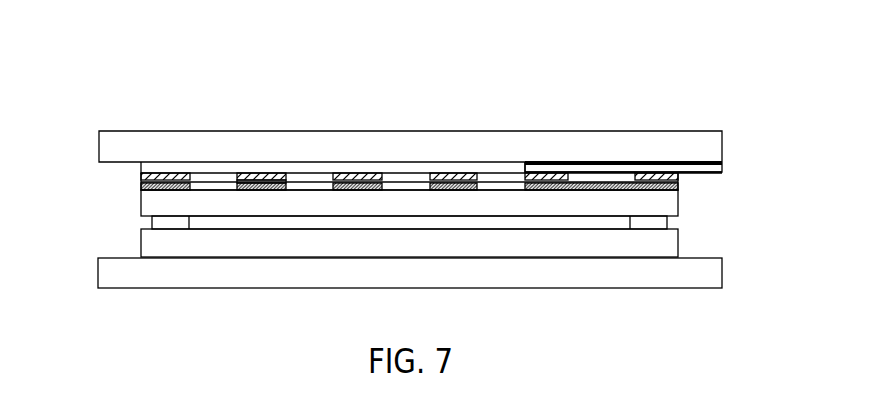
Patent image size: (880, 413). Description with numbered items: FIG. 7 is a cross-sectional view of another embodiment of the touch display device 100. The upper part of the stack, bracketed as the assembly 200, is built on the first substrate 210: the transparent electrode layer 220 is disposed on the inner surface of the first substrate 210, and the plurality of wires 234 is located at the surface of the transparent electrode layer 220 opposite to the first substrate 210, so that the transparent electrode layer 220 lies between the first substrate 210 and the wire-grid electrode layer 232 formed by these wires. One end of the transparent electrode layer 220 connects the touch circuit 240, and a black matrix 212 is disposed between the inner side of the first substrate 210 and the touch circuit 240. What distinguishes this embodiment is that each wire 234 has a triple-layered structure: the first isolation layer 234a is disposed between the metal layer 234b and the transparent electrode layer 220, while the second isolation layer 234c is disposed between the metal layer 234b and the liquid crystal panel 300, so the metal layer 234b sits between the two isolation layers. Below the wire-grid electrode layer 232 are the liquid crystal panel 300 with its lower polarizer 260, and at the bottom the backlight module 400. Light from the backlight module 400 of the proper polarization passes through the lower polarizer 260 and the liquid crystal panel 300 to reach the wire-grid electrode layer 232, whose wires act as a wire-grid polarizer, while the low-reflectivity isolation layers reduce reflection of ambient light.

The touch display device 100 is at (143, 44).
The display panel 200 is at (733, 129).
The first substrate 210 is at (103, 148).
The black matrix 212 is at (687, 163).
The transparent electrode layer 220 is at (203, 168).
The wire-grid electrode layer 232 is at (139, 178).
The wire 234 is at (369, 91).
The first isolation layer 234a is at (245, 173).
The metal layer 234b is at (270, 180).
The second isolation layer 234c is at (282, 185).
The touch circuit 240 is at (607, 170).
The lower polarizer 260 is at (678, 257).
The liquid crystal panel 300 is at (137, 190).
The backlight module 400 is at (107, 273).